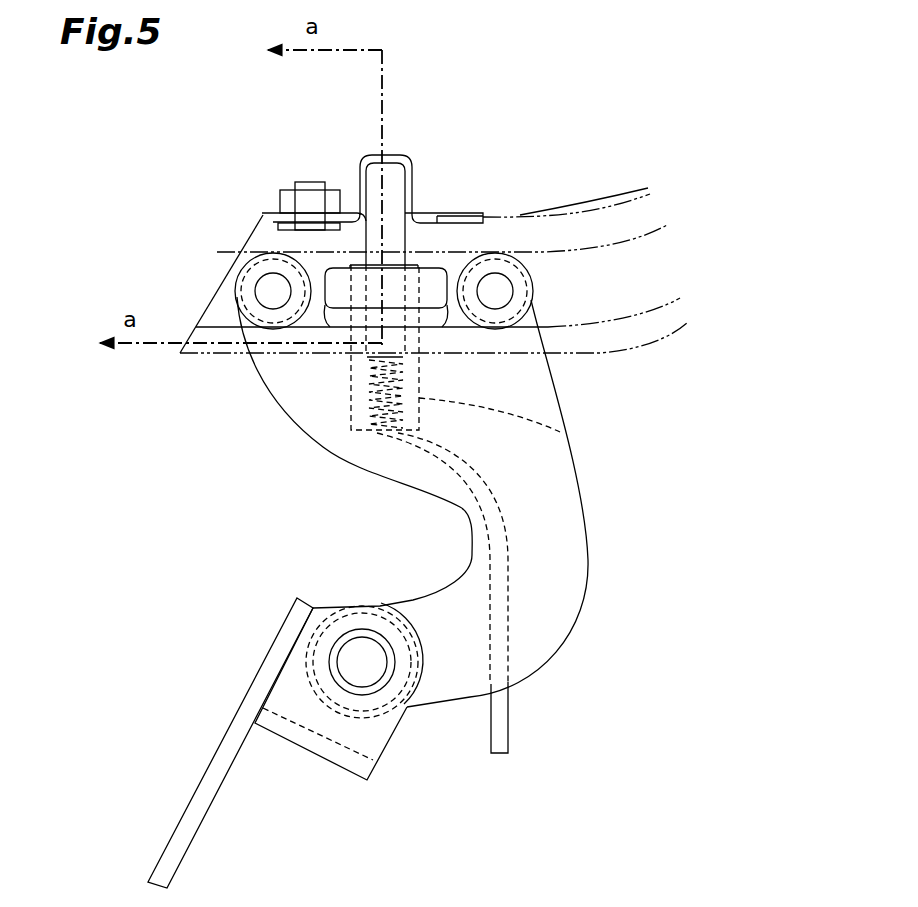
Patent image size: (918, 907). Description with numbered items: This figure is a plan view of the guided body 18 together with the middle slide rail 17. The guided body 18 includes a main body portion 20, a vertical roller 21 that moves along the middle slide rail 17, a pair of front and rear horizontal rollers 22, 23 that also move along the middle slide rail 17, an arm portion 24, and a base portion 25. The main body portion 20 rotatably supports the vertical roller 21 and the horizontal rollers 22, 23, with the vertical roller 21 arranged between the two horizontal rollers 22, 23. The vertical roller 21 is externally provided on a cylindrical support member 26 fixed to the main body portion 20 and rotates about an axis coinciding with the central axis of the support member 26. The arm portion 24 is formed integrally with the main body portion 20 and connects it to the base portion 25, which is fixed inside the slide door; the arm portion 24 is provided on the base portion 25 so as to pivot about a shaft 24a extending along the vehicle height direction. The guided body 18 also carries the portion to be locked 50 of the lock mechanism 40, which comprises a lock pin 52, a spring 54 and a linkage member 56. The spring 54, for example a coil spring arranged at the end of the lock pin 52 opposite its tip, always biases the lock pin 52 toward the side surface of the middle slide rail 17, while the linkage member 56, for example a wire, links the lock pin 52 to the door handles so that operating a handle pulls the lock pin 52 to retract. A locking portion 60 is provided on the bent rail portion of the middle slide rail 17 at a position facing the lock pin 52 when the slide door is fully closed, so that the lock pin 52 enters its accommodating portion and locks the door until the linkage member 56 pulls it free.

The middle slide rail 17 is at (590, 200).
The guided body 18 is at (602, 570).
The main body portion 20 is at (530, 378).
The vertical roller 21 is at (435, 272).
The front horizontal roller 22 is at (246, 264).
The rear horizontal roller 23 is at (530, 273).
The arm portion 24 is at (443, 683).
The shaft 24a is at (355, 657).
The base portion 25 is at (197, 812).
The support member 26 is at (350, 380).
The lock mechanism 40 is at (338, 176).
The portion to be locked 50 is at (355, 412).
The lock pin 52 is at (380, 177).
The spring 54 is at (560, 432).
The linkage member 56 is at (502, 723).
The locking portion 60 is at (404, 152).